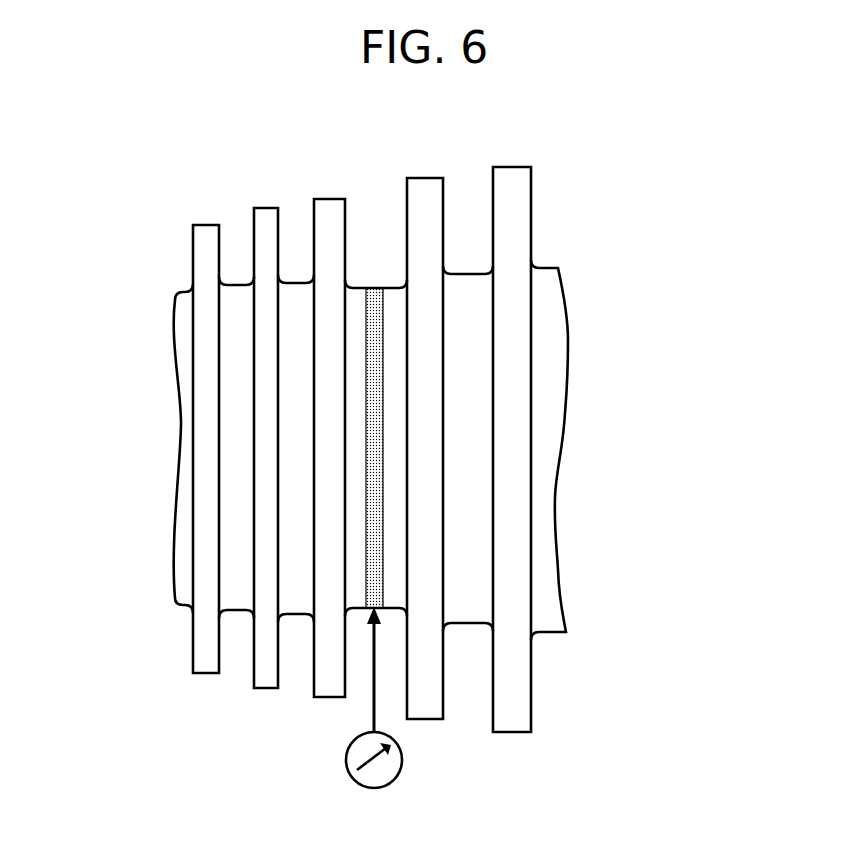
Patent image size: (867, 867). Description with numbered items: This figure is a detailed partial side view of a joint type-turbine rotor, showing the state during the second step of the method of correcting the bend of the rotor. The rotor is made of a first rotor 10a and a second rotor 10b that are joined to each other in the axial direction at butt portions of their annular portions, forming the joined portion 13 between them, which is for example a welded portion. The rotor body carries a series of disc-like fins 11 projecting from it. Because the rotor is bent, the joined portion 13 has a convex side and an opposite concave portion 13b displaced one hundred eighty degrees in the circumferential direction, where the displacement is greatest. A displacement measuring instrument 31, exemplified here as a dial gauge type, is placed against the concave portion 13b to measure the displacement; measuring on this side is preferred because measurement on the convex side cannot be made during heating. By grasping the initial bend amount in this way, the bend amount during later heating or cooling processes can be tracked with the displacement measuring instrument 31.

The first rotor 10a is at (170, 431).
The second rotor 10b is at (580, 413).
The fin 11 is at (423, 337).
The joined portion 13 is at (381, 268).
The concave portion 13b is at (375, 287).
The displacement measuring instrument 31 is at (407, 768).